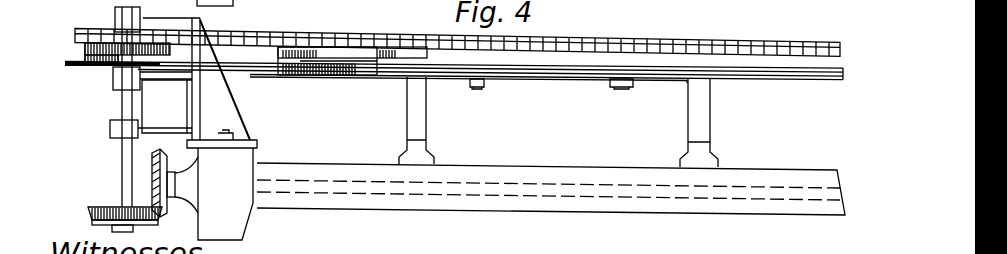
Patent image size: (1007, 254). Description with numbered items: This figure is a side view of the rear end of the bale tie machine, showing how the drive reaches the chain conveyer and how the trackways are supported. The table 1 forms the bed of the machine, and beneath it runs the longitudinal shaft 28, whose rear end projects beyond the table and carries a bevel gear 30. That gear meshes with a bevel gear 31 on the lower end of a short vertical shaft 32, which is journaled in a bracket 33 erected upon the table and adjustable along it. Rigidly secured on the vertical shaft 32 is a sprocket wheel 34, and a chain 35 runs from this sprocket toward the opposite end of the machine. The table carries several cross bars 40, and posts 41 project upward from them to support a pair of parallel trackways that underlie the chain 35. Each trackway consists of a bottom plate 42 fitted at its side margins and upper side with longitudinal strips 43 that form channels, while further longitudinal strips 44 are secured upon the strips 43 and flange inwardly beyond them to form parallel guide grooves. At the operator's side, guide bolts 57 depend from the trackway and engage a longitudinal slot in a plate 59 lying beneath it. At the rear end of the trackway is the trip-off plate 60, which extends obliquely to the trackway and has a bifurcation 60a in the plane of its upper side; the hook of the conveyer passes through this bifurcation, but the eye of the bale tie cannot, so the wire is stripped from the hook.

The table 1 is at (522, 166).
The longitudinal shaft 28 is at (357, 188).
The bevel gear 30 is at (160, 215).
The bevel gear 31 is at (95, 213).
The short vertical shaft 32 is at (110, 128).
The bracket 33 is at (200, 104).
The sprocket wheel 34 is at (78, 30).
The chain 35 is at (596, 42).
The cross bar 40 is at (405, 150).
The posts 41 is at (426, 113).
The bottom plates 42 is at (830, 75).
The longitudinal strips 43 is at (810, 72).
The longitudinal strips 44 is at (792, 70).
The guide bolts 57 is at (480, 88).
The plate 59 is at (553, 80).
The trip-off plate 60 is at (286, 76).
The bifurcation 60a is at (356, 76).